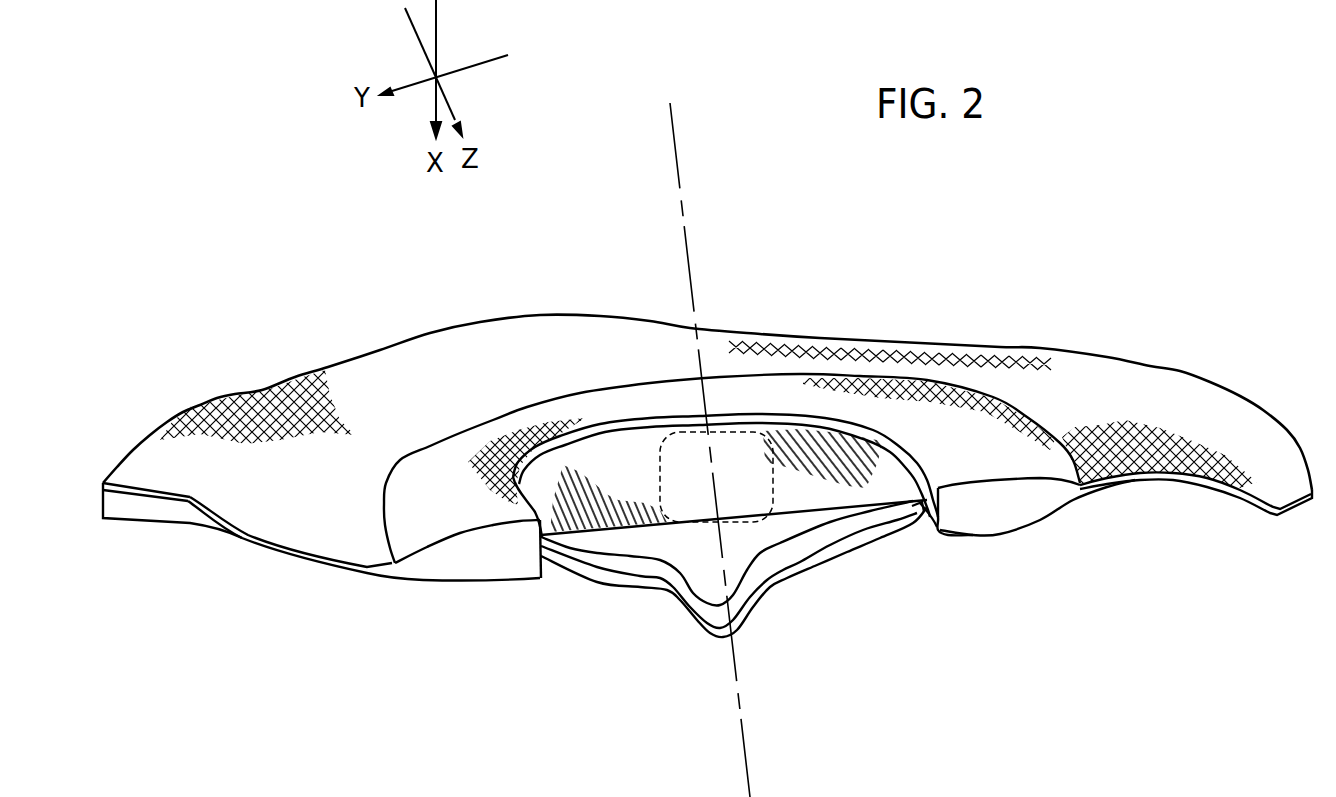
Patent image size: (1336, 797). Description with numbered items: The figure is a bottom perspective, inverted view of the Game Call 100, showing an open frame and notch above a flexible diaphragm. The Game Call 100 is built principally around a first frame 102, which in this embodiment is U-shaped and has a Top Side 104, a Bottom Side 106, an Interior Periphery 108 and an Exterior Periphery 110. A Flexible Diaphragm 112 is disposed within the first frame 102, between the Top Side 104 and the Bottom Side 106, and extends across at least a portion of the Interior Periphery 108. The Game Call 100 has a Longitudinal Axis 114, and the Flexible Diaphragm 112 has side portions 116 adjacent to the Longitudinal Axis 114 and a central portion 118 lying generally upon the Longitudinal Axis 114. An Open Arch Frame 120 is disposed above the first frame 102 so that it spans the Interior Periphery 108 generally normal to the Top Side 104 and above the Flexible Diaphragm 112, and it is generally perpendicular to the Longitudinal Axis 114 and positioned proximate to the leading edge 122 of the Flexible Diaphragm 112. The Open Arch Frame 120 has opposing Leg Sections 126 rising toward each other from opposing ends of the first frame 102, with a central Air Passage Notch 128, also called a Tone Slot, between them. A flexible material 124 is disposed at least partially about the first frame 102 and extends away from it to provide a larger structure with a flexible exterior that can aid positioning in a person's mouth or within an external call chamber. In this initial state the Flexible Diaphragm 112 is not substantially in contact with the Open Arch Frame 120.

The game call 100 is at (278, 323).
The first frame 102 is at (460, 564).
The top side 104 is at (973, 537).
The bottom side 106 is at (456, 527).
The interior periphery 108 is at (927, 517).
The exterior periphery 110 is at (388, 549).
The flexible diaphragm 112 is at (650, 470).
The longitudinal axis 114 is at (701, 440).
The side portions 116 is at (597, 473).
The central portion 118 is at (697, 455).
The open arch frame 120 is at (764, 643).
The leading edge 122 is at (700, 520).
The flexible material 124 is at (313, 515).
The leg sections 126 is at (593, 580).
The air passage notch 128 is at (703, 625).